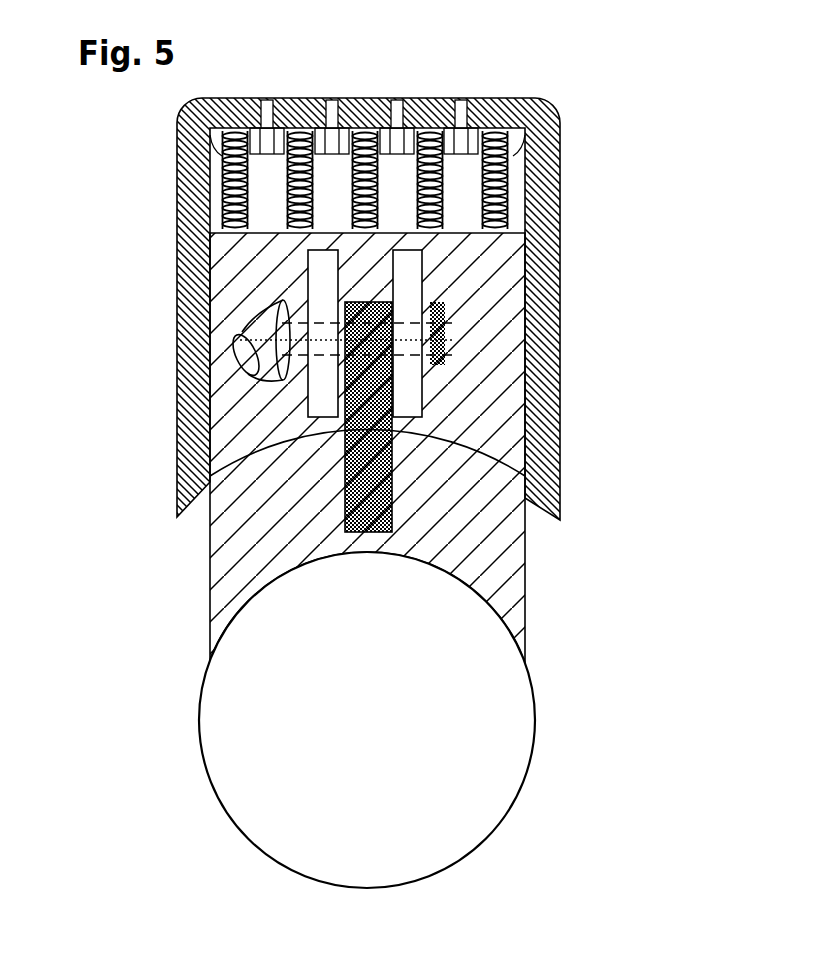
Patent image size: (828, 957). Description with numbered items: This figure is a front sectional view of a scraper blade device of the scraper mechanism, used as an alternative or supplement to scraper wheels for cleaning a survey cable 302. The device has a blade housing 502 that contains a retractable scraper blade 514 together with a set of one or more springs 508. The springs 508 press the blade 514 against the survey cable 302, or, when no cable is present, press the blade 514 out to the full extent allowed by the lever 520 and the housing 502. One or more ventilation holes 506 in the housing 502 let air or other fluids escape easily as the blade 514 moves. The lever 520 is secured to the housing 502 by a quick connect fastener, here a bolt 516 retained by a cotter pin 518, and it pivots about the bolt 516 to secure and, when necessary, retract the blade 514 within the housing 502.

The survey cable 302 is at (537, 700).
The blade housing 502 is at (175, 175).
The ventilation holes 506 is at (462, 100).
The springs 508 is at (510, 177).
The retractable scraper blade 514 is at (527, 580).
The bolt 516 is at (257, 327).
The cotter pin 518 is at (430, 315).
The lever 520 is at (345, 490).